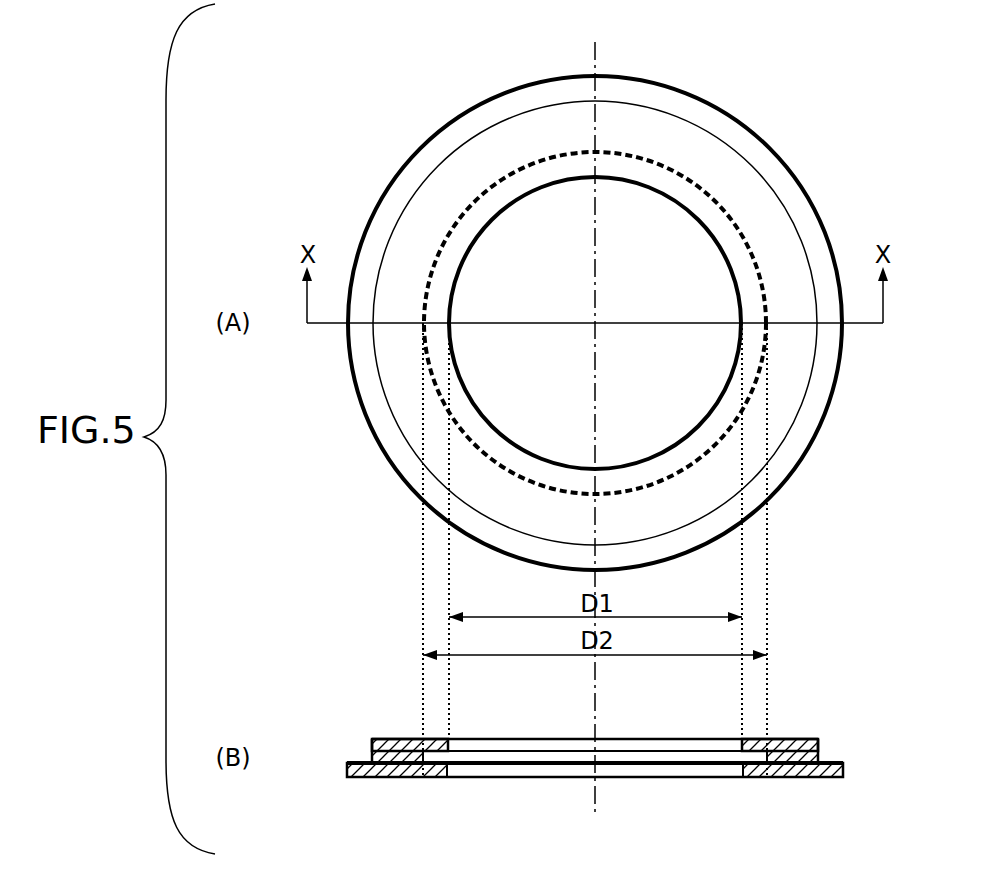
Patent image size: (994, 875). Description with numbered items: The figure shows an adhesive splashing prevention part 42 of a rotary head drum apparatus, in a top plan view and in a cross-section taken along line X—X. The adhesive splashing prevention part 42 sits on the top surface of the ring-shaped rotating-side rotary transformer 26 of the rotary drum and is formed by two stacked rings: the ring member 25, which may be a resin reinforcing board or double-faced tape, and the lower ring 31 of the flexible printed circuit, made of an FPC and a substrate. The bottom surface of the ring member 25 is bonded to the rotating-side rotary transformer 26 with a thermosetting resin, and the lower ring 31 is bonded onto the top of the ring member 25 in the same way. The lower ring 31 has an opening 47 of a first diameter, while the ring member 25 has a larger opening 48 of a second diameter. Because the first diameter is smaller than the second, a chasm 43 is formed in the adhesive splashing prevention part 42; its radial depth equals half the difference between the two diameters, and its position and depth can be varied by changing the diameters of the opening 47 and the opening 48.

The ring member 25 is at (372, 752).
The rotating-side rotary transformer 26 is at (787, 183).
The lower ring 31 is at (780, 418).
The adhesive splashing prevention part 42 is at (690, 138).
The chasm 43 is at (428, 757).
The opening 47 is at (572, 295).
The opening 48 is at (487, 188).